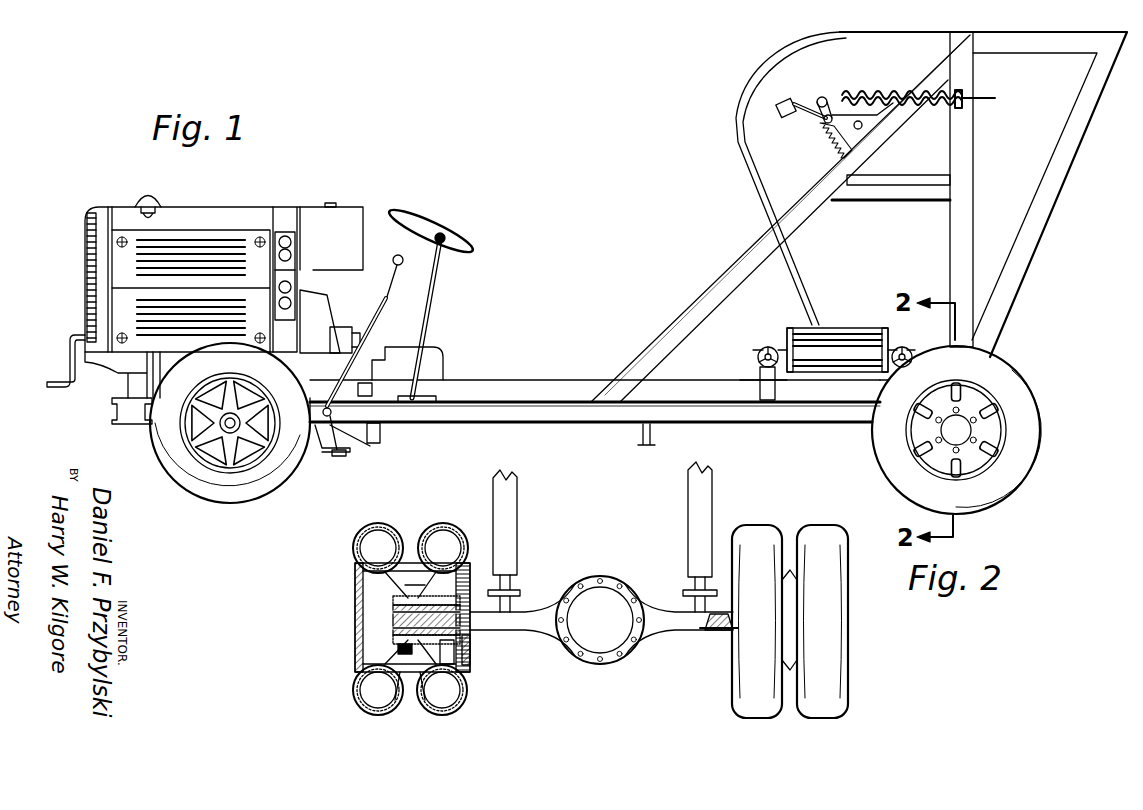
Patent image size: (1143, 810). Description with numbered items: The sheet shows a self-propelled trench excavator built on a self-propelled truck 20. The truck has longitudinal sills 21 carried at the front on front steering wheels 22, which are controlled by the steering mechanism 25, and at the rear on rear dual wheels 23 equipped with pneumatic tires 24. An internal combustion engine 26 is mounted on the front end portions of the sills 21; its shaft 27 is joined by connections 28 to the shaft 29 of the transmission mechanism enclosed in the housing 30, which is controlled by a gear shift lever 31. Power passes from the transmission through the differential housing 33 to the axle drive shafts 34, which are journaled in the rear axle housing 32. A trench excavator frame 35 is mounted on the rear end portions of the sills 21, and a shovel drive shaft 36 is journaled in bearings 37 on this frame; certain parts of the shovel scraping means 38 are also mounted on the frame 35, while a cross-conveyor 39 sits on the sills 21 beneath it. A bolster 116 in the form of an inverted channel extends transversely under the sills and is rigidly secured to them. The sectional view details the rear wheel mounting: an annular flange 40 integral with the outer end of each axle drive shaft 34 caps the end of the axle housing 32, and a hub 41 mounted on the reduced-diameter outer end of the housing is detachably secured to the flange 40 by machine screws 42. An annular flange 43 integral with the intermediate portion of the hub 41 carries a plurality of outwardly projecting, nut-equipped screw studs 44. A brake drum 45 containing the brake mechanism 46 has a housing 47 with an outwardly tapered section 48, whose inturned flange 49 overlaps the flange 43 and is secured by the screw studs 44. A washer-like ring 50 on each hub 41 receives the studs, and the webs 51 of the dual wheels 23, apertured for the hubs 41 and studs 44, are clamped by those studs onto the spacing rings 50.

In FIG. 1, the self-propelled truck 20 is at (458, 438).
In FIG. 2, the self-propelled truck 20 is at (689, 643).
In FIG. 1, the longitudinal sills 21 is at (496, 418).
In FIG. 2, the longitudinal sills 21 is at (510, 586).
In FIG. 1, the front steering wheels 22 is at (232, 458).
In FIG. 1, the rear dual wheels 23 is at (940, 452).
In FIG. 2, the rear dual wheels 23 is at (356, 574).
In FIG. 1, the pneumatic tires 24 is at (997, 377).
In FIG. 2, the pneumatic tires 24 is at (440, 535).
In FIG. 1, the steering mechanism 25 is at (428, 303).
In FIG. 1, the internal combustion engine 26 is at (76, 289).
In FIG. 1, the engine shaft 27 is at (345, 330).
In FIG. 1, the connections 28 is at (355, 358).
In FIG. 1, the transmission shaft 29 is at (376, 378).
In FIG. 1, the transmission housing 30 is at (427, 360).
In FIG. 1, the gear shift lever 31 is at (396, 256).
In FIG. 2, the rear axle housing 32 is at (717, 631).
In FIG. 2, the differential housing 33 is at (607, 596).
In FIG. 2, the axle drive shafts 34 is at (716, 615).
In FIG. 1, the trench excavator frame 35 is at (958, 226).
In FIG. 2, the trench excavator frame 35 is at (508, 530).
In FIG. 1, the shovel drive shaft 36 is at (862, 127).
In FIG. 1, the bearings 37 is at (853, 135).
In FIG. 1, the shovel scraping means 38 is at (784, 116).
In FIG. 1, the cross-conveyor 39 is at (833, 343).
In FIG. 2, the annular flange 40 is at (400, 600).
In FIG. 2, the hub 41 is at (408, 590).
In FIG. 2, the machine screws 42 is at (393, 617).
In FIG. 2, the annular flange 43 is at (455, 645).
In FIG. 2, the screw studs 44 is at (405, 642).
In FIG. 2, the brake drum 45 is at (442, 690).
In FIG. 2, the brake mechanism 46 is at (468, 660).
In FIG. 2, the housing 47 is at (443, 548).
In FIG. 2, the tapered housing section 48 is at (412, 680).
In FIG. 2, the inturned flange 49 is at (378, 690).
In FIG. 2, the washer-like ring 50 is at (378, 548).
In FIG. 2, the wheel webs 51 is at (398, 648).
In FIG. 1, the bolster 116 is at (640, 435).